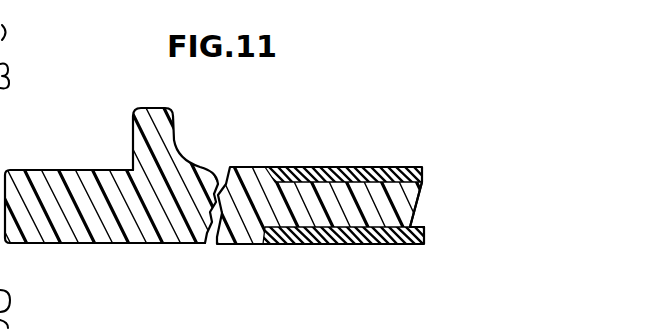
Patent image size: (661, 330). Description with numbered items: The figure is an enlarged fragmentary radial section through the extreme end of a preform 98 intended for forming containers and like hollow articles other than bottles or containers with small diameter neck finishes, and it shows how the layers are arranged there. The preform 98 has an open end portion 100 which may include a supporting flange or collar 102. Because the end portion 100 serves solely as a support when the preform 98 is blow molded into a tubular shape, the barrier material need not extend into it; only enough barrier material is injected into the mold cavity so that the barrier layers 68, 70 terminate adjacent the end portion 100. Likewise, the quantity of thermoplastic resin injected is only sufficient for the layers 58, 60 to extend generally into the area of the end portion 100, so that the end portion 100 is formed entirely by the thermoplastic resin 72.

The open end portion 100 is at (103, 246).
The supporting flange or collar 102 is at (162, 129).
The thermoplastic resin 72 is at (187, 220).
The preform 98 is at (303, 157).
The layer of thermoplastic resin 60 is at (375, 166).
The layer of thermoplastic resin 58 is at (370, 244).
The barrier material layer 70 is at (422, 184).
The barrier material layer 68 is at (418, 218).